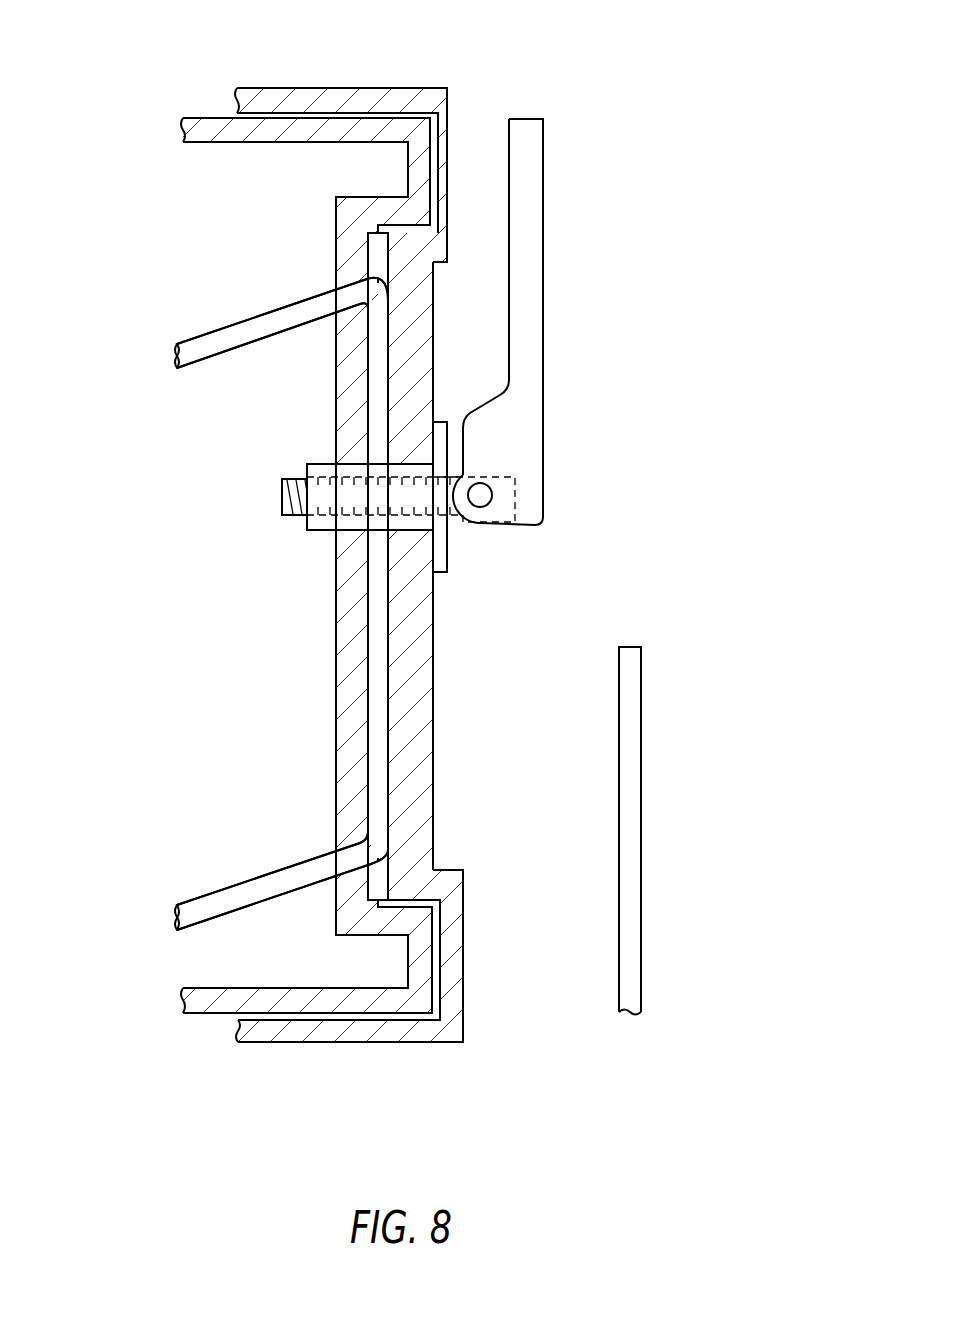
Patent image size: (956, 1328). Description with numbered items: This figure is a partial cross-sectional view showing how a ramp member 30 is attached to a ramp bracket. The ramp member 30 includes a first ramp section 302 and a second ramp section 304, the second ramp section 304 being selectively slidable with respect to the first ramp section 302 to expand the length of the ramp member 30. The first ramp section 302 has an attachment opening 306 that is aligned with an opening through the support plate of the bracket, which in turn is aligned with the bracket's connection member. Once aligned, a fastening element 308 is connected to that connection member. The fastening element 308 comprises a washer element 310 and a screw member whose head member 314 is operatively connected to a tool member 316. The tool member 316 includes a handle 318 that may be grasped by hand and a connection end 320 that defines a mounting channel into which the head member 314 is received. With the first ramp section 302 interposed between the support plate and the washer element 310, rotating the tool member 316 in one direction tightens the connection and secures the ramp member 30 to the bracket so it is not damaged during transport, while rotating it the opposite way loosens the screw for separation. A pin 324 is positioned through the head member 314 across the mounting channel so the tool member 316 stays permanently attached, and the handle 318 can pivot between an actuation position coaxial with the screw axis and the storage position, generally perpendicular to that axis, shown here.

The ramp member 30 is at (438, 62).
The first ramp section 302 is at (418, 322).
The second ramp section 304 is at (283, 987).
The attachment opening 306 is at (403, 532).
The fastening element 308 is at (489, 450).
The washer element 310 is at (439, 434).
The head member 314 is at (500, 483).
The tool member 316 is at (569, 351).
The handle 318 is at (530, 162).
The connection end 320 is at (544, 492).
The pin 324 is at (482, 503).